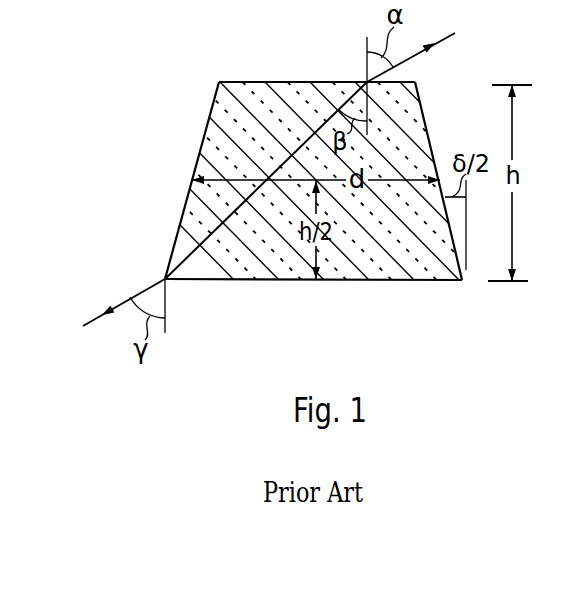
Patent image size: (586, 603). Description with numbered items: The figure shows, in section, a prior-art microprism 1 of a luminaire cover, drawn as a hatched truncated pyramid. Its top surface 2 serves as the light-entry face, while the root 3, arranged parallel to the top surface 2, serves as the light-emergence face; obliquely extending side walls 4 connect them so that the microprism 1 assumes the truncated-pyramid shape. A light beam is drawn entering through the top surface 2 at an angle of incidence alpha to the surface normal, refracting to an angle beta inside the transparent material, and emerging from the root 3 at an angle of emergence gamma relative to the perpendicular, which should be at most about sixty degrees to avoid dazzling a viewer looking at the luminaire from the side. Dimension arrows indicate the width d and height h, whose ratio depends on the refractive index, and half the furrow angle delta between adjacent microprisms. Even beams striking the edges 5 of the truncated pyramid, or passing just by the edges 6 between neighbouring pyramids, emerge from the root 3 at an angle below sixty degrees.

The microprism 1 is at (198, 133).
The top surface 2 is at (278, 80).
The root 3 is at (263, 281).
The side walls 4 is at (421, 112).
The edges 5 is at (219, 82).
The edges 6 is at (463, 282).